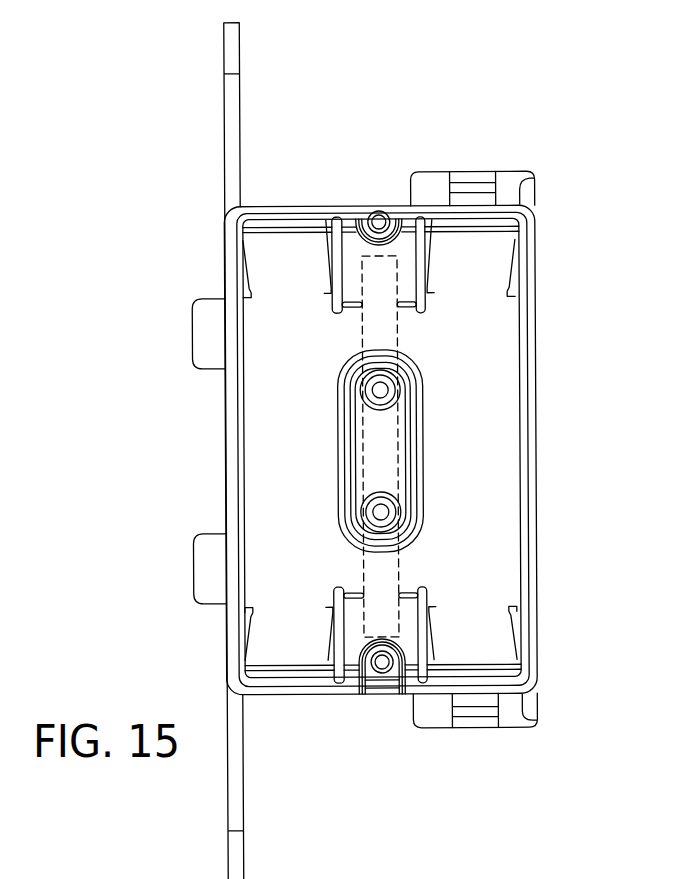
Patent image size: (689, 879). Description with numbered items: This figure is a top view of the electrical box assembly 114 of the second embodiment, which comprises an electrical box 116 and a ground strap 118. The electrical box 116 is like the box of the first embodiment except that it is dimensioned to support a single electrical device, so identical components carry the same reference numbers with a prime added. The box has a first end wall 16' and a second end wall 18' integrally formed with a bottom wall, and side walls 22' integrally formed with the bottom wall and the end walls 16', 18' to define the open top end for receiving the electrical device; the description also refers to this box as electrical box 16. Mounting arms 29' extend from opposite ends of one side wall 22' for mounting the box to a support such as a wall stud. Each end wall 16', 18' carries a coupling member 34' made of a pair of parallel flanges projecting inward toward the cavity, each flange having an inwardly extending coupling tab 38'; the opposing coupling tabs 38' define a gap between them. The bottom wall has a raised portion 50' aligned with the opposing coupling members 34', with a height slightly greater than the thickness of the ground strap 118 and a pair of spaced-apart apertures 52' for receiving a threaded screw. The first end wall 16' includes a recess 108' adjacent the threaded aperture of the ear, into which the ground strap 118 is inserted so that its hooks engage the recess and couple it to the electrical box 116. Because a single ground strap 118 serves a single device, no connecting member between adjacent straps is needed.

The mounting arm 29' is at (279, 450).
The second end wall 18' is at (381, 407).
The electrical box 116 is at (536, 315).
The side wall 22' is at (383, 449).
The first end wall 16' is at (380, 507).
The coupling member 34' is at (421, 449).
The coupling tab 38' is at (378, 450).
The ground strap 118 is at (411, 338).
The raised portion 50' is at (417, 450).
The aperture 52' is at (346, 451).
The recess 108' is at (386, 708).
The electrical box assembly 114 is at (520, 137).
The first end wall 16 is at (378, 499).